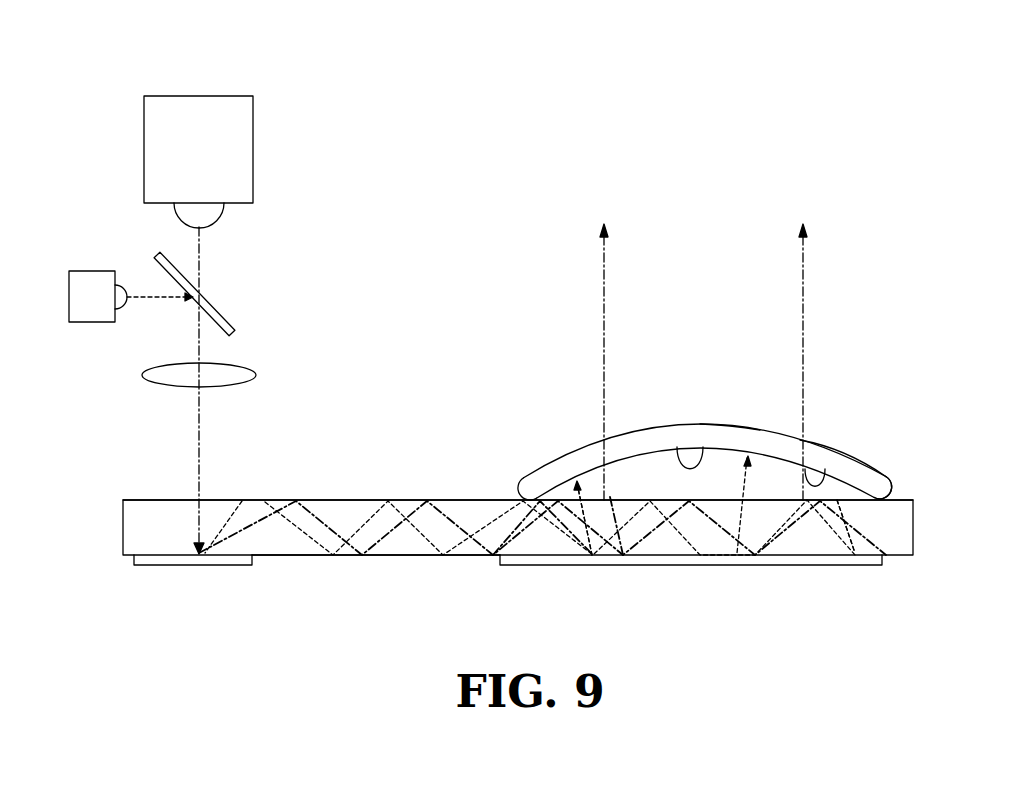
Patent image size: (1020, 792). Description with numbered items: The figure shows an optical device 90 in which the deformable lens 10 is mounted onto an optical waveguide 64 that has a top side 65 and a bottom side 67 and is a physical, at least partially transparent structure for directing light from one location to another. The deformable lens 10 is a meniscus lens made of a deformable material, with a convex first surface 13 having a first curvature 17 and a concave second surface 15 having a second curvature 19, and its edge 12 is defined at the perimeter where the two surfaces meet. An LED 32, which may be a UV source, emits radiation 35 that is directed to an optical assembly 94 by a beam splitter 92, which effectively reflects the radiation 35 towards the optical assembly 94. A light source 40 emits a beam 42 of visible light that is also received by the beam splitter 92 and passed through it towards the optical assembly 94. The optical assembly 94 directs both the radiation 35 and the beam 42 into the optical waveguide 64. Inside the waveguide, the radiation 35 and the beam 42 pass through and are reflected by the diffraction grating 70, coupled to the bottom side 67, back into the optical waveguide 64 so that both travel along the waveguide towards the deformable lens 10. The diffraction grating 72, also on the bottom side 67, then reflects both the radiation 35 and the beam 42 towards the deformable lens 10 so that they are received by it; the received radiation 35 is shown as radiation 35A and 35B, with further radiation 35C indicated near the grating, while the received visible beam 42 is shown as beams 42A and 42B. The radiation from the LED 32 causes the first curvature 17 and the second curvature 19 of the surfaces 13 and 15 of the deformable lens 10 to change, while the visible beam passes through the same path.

The light source 40 is at (203, 115).
The LED 32 is at (83, 285).
The radiation 35 is at (145, 300).
The beam splitter 92 is at (215, 305).
The beam 42 is at (207, 247).
The optical assembly 94 is at (250, 366).
The optical waveguide 64 is at (128, 520).
The top side 65 is at (153, 500).
The bottom side 67 is at (434, 556).
The diffraction grating 70 is at (245, 566).
The diffraction grating 72 is at (527, 566).
The beam 42A is at (607, 280).
The beam 42B is at (808, 258).
The optical device 90 is at (776, 152).
The deformable lens 10 is at (830, 447).
The edge 12 is at (890, 473).
The first surface 13 is at (860, 458).
The second surface 15 is at (798, 493).
The first curvature 17 is at (758, 427).
The second curvature 19 is at (674, 447).
The radiation 35A is at (607, 503).
The radiation 35B is at (737, 497).
The radiation 35C is at (878, 565).